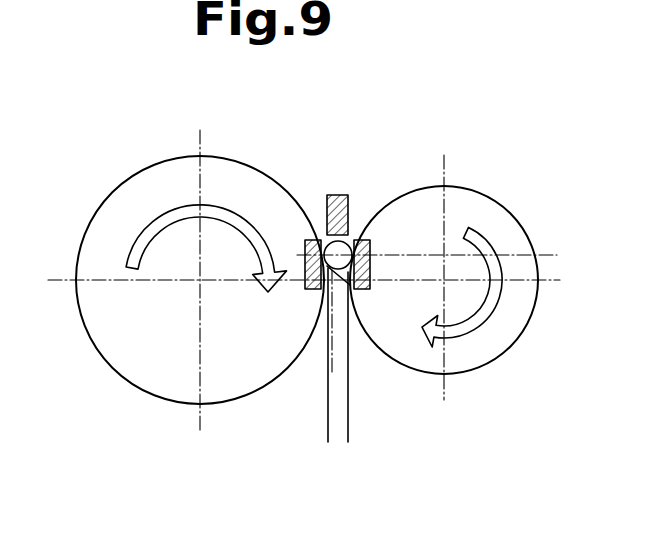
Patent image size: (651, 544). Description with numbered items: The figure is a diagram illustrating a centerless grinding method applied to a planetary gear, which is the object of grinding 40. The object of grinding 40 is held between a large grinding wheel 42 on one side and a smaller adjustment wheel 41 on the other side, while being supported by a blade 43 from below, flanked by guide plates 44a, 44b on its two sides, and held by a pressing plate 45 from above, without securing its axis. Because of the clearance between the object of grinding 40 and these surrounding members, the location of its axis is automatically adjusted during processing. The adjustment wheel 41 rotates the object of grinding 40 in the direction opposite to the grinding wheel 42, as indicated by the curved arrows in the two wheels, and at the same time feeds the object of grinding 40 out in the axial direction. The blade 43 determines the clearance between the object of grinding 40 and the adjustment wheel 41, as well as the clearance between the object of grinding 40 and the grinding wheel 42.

The object of grinding 40 is at (349, 236).
The adjustment wheel 41 is at (519, 215).
The grinding wheel 42 is at (82, 218).
The blade 43 is at (350, 392).
The guide plate 44a is at (312, 291).
The guide plate 44b is at (363, 291).
The pressing plate 45 is at (338, 195).